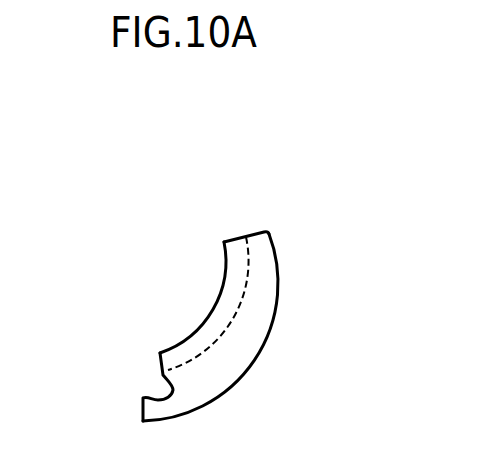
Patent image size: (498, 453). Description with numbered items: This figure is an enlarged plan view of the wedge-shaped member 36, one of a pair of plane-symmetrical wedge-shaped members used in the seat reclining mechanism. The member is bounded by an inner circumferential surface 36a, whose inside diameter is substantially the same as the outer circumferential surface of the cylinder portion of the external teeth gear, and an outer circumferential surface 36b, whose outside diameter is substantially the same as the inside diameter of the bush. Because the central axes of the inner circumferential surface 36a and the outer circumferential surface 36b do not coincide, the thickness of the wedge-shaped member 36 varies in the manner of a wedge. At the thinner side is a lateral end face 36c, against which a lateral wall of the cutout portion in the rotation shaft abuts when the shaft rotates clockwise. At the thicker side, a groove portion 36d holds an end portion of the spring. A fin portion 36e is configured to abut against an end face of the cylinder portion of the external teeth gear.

The wedge-shaped member 36 is at (208, 256).
The inner circumferential surface 36a is at (237, 296).
The outer circumferential surface 36b is at (263, 352).
The lateral end face 36c is at (252, 232).
The groove portion 36d is at (173, 390).
The fin portion 36e is at (192, 336).